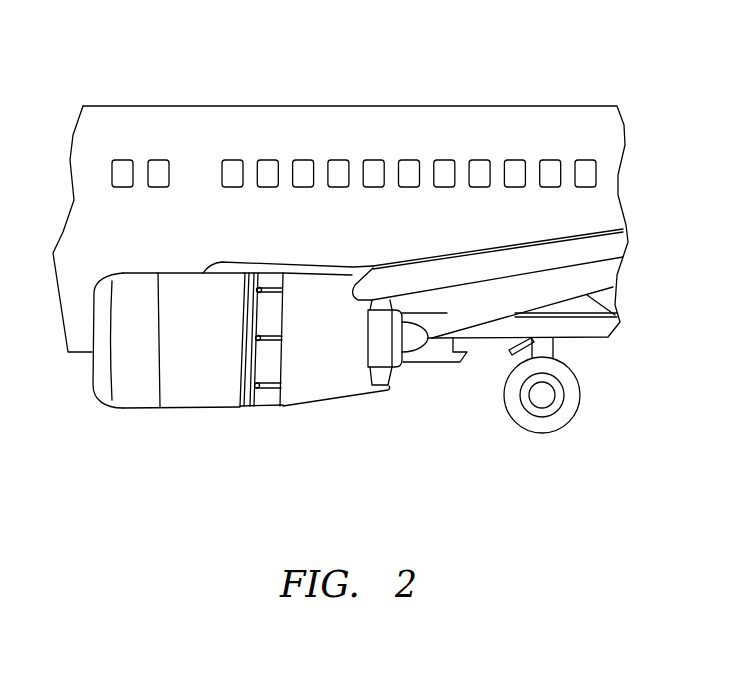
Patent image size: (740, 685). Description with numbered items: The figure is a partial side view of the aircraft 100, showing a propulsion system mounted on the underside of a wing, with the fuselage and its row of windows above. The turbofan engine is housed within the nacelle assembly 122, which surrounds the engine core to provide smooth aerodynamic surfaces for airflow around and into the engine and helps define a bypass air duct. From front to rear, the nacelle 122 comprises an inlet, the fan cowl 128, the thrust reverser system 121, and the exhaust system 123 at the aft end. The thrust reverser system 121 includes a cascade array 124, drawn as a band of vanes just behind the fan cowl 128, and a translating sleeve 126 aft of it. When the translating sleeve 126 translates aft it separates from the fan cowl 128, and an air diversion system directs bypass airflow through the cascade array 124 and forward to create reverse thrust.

The aircraft 100 is at (144, 73).
The thrust reverser system 121 is at (292, 408).
The nacelle assembly 122 is at (217, 405).
The exhaust system 123 is at (408, 392).
The cascade array 124 is at (272, 410).
The translating sleeve 126 is at (357, 383).
The fan cowl 128 is at (183, 390).